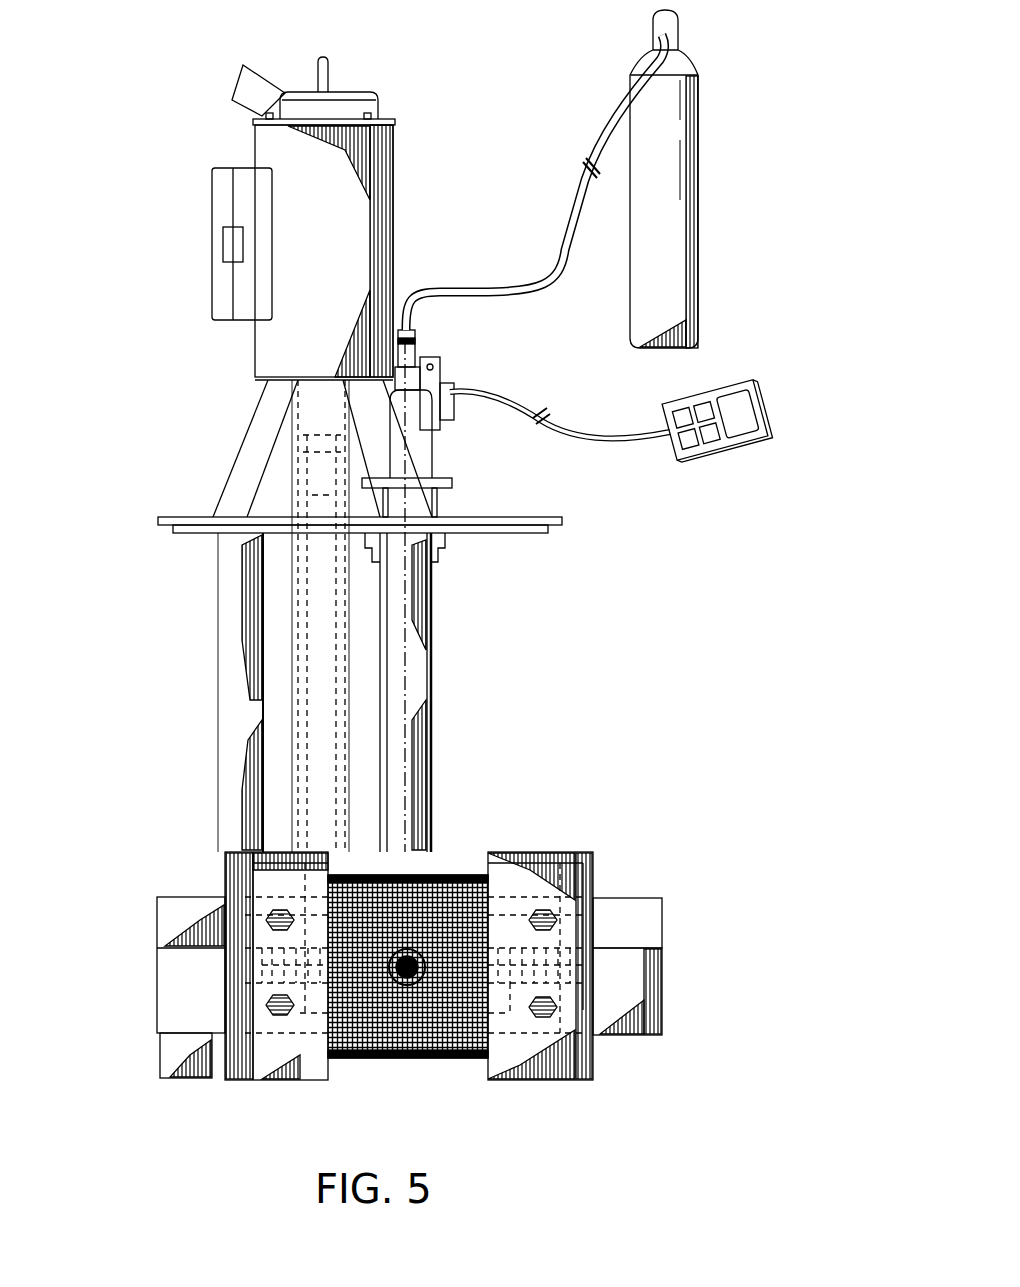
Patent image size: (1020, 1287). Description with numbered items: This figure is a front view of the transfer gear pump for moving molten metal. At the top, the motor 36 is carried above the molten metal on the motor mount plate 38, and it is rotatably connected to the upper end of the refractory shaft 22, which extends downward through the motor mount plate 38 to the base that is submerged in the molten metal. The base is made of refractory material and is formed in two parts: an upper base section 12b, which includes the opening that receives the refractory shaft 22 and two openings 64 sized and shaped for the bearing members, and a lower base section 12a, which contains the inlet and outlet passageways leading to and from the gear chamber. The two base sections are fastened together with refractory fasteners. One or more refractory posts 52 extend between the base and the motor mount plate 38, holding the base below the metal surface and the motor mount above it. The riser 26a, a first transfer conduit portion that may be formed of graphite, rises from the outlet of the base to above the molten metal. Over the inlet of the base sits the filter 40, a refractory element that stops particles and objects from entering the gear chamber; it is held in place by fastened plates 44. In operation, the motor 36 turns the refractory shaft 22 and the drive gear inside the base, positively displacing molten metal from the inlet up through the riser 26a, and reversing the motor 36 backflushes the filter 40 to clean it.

The motor 36 is at (295, 195).
The motor mount plate 38 is at (185, 517).
The refractory posts 52 is at (235, 703).
The refractory shaft 22 is at (320, 805).
The riser 26a is at (380, 658).
The filter 40 is at (455, 870).
The openings 64 is at (283, 940).
The upper base section 12b is at (607, 930).
The lower base section 12a is at (600, 1023).
The fastened plates 44 is at (288, 1055).